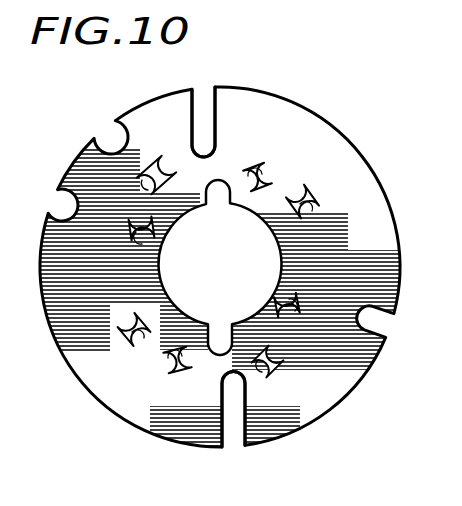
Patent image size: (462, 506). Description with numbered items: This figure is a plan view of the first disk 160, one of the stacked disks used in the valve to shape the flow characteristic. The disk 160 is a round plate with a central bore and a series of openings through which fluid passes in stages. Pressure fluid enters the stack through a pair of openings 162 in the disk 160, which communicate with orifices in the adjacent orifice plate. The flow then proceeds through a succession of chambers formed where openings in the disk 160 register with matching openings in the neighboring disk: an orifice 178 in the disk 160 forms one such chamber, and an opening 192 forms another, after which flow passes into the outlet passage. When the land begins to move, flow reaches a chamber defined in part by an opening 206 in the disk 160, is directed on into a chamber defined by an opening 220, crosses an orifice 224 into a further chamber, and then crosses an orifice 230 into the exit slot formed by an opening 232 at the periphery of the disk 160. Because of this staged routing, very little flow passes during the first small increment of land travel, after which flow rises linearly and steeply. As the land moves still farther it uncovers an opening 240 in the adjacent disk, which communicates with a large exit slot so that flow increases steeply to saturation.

The disk 160 is at (365, 153).
The openings 162 is at (218, 204).
The orifice 178 is at (274, 164).
The opening 192 is at (312, 206).
The opening 206 is at (156, 248).
The opening 220 is at (276, 366).
The opening 232 is at (208, 117).
The opening 240 is at (447, 306).
The orifice 224 is at (366, 505).
The orifice 230 is at (436, 504).